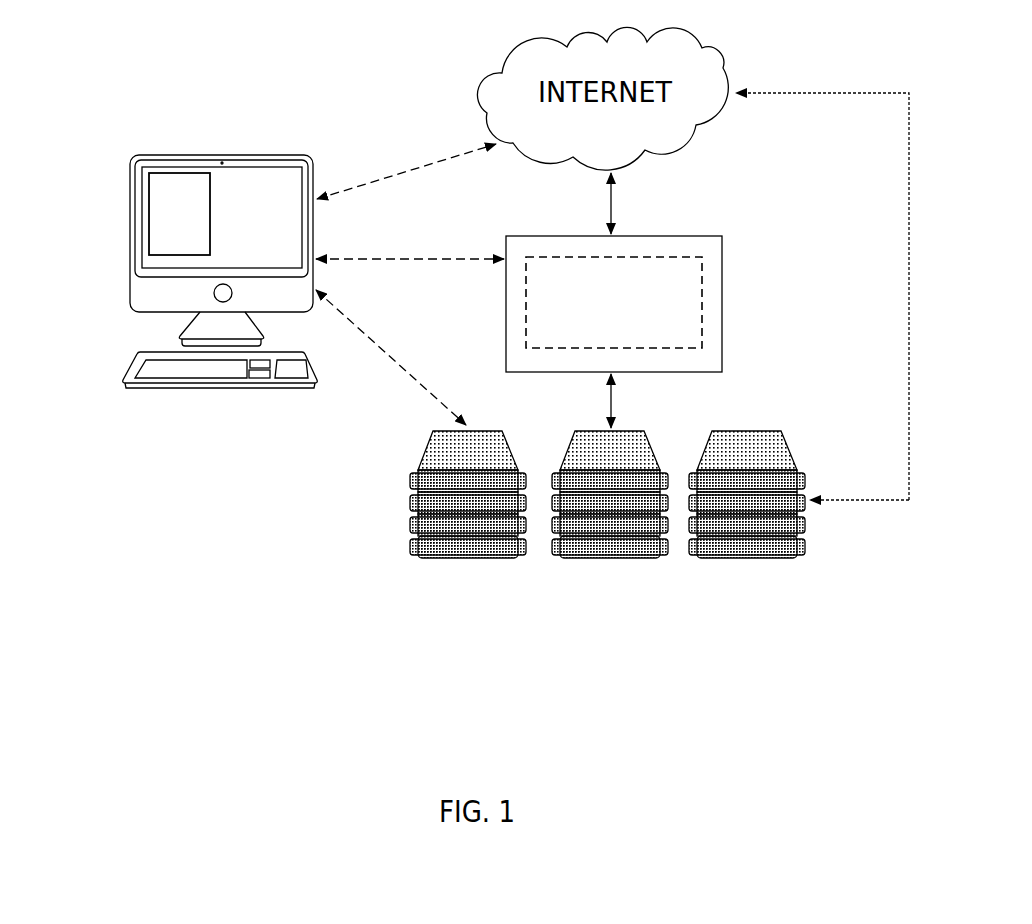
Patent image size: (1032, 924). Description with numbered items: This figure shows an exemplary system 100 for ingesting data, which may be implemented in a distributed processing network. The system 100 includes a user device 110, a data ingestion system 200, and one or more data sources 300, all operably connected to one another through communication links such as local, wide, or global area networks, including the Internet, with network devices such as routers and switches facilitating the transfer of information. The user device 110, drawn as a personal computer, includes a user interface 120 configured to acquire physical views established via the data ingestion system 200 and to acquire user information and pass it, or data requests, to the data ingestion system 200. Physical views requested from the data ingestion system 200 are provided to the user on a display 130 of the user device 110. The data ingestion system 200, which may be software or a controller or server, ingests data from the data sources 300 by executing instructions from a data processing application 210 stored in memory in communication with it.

The system 100 is at (106, 67).
The user device 110 is at (128, 268).
The user interface 120 is at (162, 203).
The display 130 is at (268, 187).
The data ingestion system 200 is at (723, 272).
The data processing application 210 is at (614, 302).
The data sources 300 is at (470, 560).